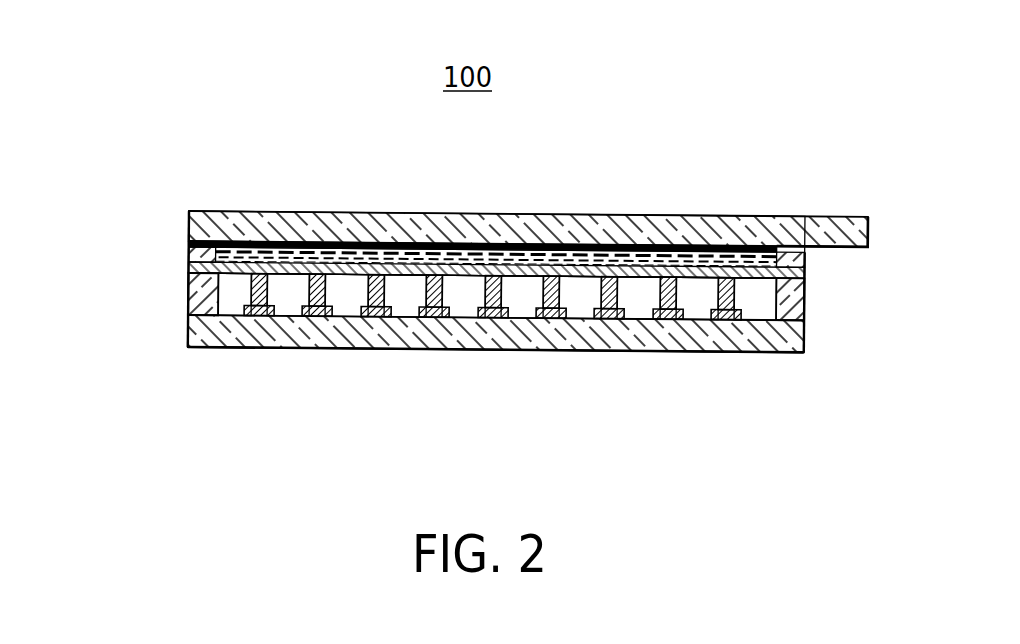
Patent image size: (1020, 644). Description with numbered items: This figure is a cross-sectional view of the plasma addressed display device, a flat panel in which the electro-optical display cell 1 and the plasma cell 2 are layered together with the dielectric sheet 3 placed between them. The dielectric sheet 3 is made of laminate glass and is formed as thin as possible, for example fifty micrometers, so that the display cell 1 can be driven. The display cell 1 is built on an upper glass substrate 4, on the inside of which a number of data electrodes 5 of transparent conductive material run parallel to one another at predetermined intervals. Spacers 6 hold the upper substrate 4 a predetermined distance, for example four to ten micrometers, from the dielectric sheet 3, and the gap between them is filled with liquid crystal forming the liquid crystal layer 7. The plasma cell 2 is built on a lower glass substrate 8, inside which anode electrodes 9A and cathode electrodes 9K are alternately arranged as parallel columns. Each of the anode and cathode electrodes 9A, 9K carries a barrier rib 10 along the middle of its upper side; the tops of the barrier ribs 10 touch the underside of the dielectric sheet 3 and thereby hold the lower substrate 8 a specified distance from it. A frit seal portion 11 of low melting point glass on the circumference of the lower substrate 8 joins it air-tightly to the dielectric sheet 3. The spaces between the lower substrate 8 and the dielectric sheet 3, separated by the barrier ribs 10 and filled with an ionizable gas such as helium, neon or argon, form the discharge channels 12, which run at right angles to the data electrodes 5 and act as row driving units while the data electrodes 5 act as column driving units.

The electro-optical display cell 1 is at (182, 247).
The plasma cell 2 is at (178, 338).
The dielectric sheet 3 is at (807, 312).
The upper glass substrate 4 is at (552, 228).
The data electrodes 5 is at (857, 253).
The spacers 6 is at (810, 263).
The liquid crystal layer 7 is at (763, 253).
The lower glass substrate 8 is at (772, 347).
The anode electrodes 9A is at (270, 302).
The cathode electrodes 9K is at (327, 302).
The barrier ribs 10 is at (243, 310).
The frit seal portion 11 is at (807, 320).
The discharge channels 12 is at (289, 284).